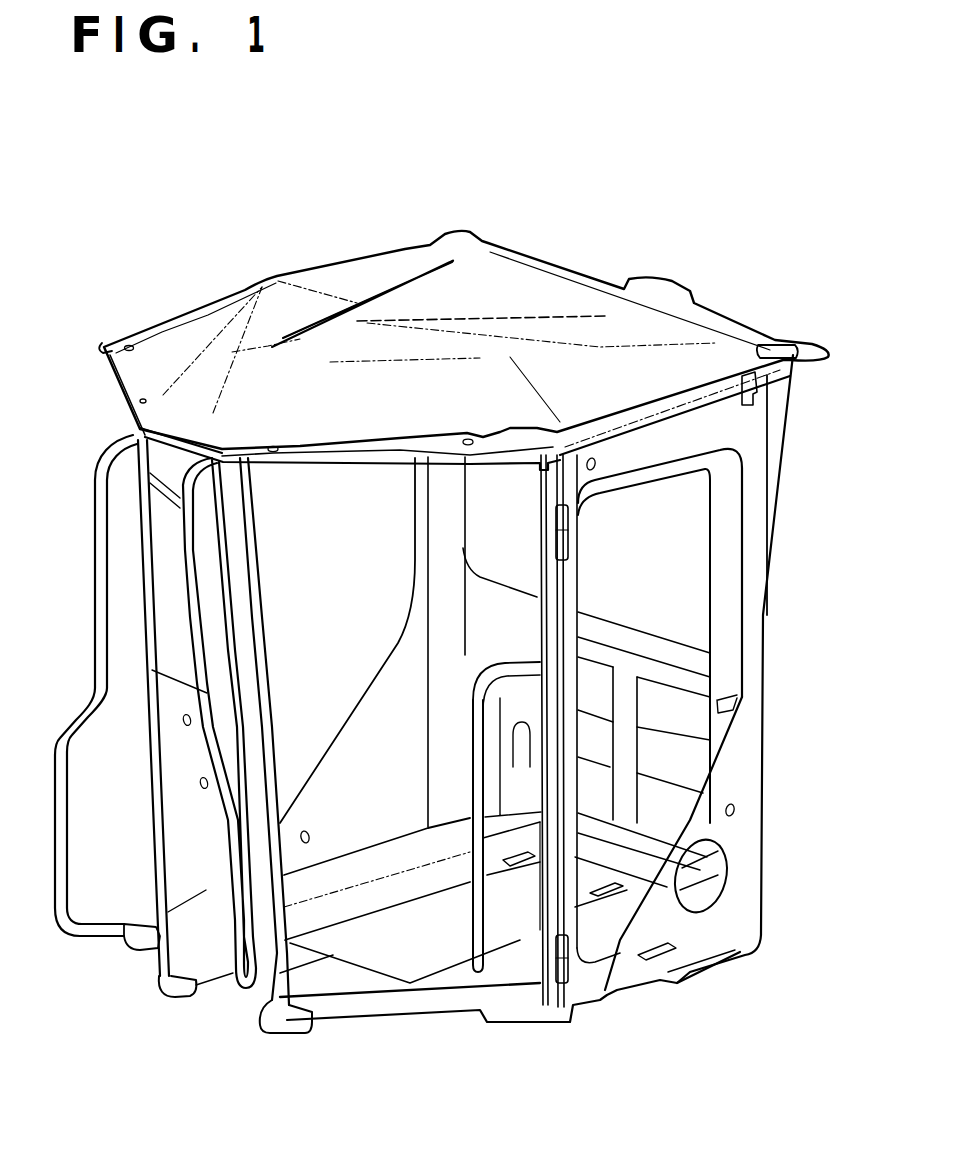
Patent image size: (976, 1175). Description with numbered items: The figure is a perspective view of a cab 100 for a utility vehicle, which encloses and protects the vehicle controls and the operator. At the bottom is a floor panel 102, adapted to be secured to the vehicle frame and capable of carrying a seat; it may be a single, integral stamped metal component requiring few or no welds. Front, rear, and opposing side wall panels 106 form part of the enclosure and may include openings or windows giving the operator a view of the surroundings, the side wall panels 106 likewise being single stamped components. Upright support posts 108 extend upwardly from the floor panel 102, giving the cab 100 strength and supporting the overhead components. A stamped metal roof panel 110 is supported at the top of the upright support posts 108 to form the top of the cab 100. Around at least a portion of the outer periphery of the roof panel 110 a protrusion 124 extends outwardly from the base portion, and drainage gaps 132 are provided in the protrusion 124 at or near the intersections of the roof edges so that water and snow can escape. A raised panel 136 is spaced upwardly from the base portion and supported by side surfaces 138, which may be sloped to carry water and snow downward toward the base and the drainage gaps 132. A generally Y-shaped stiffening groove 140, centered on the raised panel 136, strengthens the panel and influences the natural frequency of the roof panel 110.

The cab 100 is at (678, 150).
The floor panel 102 is at (410, 963).
The wall panels 106 is at (357, 785).
The upright support posts 108 is at (443, 512).
The stamped metal roof panel 110 is at (508, 278).
The protrusion 124 is at (104, 347).
The drainage gaps 132 is at (785, 338).
The raised panel 136 is at (322, 290).
The side surfaces 138 is at (360, 417).
The stiffening groove 140 is at (545, 313).